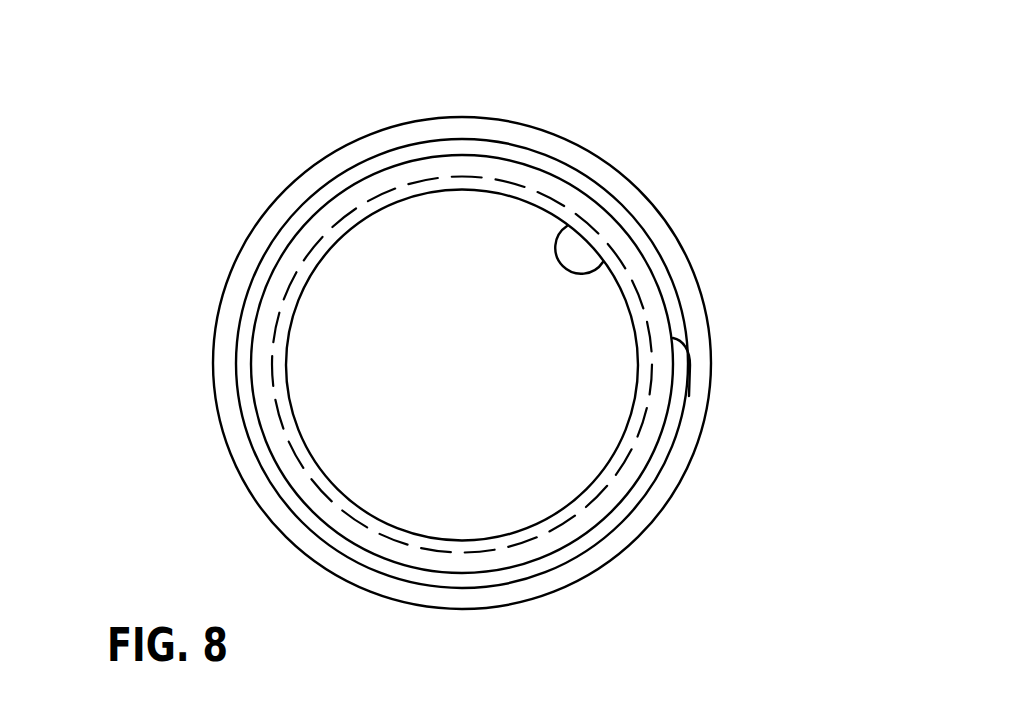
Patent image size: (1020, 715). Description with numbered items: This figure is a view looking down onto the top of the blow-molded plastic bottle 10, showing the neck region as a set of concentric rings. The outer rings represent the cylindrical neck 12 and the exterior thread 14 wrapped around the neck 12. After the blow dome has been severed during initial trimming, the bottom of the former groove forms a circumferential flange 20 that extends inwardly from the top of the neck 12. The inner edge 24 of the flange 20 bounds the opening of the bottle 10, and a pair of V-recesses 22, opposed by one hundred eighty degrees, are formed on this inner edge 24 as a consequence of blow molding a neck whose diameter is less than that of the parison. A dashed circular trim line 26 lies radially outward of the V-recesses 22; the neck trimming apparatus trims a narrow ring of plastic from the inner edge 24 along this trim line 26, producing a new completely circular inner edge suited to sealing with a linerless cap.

The plastic bottle 10 is at (216, 493).
The cylindrical neck 12 is at (277, 263).
The exterior thread 14 is at (690, 385).
The circumferential flange 20 is at (583, 525).
The V-recesses 22 is at (649, 365).
The inner edge 24 is at (603, 263).
The circular trim line 26 is at (505, 180).